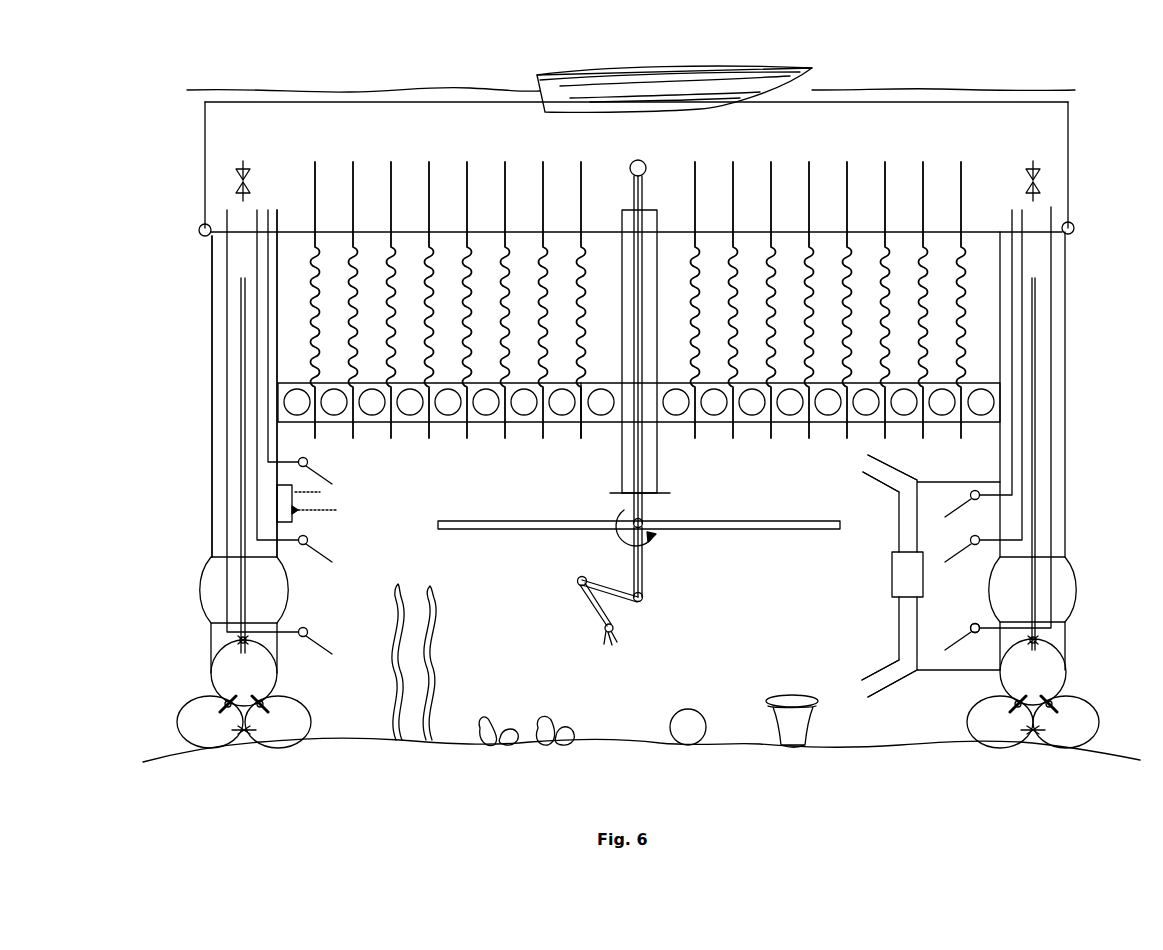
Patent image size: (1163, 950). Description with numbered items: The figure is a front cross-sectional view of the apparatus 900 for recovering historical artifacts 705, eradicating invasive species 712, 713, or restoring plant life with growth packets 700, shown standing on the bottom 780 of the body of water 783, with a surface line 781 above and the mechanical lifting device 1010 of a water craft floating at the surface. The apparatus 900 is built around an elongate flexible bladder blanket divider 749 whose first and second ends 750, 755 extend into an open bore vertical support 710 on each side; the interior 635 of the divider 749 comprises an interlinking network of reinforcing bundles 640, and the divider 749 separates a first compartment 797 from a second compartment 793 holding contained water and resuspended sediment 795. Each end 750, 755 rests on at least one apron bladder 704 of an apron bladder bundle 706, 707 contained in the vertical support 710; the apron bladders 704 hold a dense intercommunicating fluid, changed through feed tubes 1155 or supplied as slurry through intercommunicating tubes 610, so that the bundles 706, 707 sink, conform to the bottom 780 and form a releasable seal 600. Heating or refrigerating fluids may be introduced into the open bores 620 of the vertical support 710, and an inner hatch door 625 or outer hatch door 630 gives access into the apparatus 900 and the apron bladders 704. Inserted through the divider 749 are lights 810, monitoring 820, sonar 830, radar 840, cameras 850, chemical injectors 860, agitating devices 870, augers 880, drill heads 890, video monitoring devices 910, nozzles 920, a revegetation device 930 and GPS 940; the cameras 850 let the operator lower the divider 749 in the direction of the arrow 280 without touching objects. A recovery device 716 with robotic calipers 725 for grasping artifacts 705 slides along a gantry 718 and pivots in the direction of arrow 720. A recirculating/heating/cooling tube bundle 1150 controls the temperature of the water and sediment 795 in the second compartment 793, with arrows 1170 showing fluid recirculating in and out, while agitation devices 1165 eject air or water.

The body of water 783 is at (297, 74).
The surface line 781 is at (375, 88).
The mechanical lifting device 1010 is at (569, 72).
The apparatus 900 is at (276, 150).
The lights 810 is at (315, 290).
The monitoring device 820 is at (353, 290).
The sonar 830 is at (391, 290).
The radar 840 is at (429, 290).
The cameras 850 is at (467, 290).
The chemical injectors 860 is at (505, 290).
The agitating devices 870 is at (543, 290).
The augers 880 is at (581, 290).
The drill heads 890 is at (695, 290).
The GPS 940 is at (732, 290).
The video monitoring devices 910 is at (771, 290).
The nozzles 920 is at (809, 290).
The revegetation device 930 is at (847, 290).
The elongate flexible bladder blanket divider 749 is at (639, 438).
The reinforcing bundles 640 is at (560, 440).
The interior of the elongate flexible bladder blanket divider 635 is at (593, 440).
The first compartment 797 is at (692, 290).
The arrow 720 is at (620, 548).
The gantry 718 is at (766, 531).
The recovery device 716 is at (680, 602).
The robotic calipers 725 is at (592, 606).
The second compartment 793 is at (510, 496).
The contained water and resuspended sediment 795 is at (825, 608).
The first end 750 is at (283, 245).
The second end 755 is at (999, 245).
The open bores 620 is at (210, 262).
The open bore vertical support 710 is at (211, 396).
The outer hatch door 630 is at (205, 575).
The inner hatch door 625 is at (290, 590).
The intercommunicating tubes 610 is at (272, 702).
The apron bladder bundle 707 is at (180, 622).
The apron bladder 704 is at (1060, 660).
The apron bladder bundle 706 is at (1088, 682).
The feed tubes 1155 is at (1050, 350).
The arrow 280 is at (1112, 518).
The recirculating/heating/cooling tube bundle 1150 is at (898, 538).
The arrows 1170 is at (866, 460).
The agitation devices 1165 is at (945, 640).
The releasable seal 600 is at (966, 741).
The bottom of the body of water 780 is at (1118, 759).
The growth packets 700 is at (699, 712).
The historical artifacts 705 is at (788, 727).
The invasive species 712 is at (394, 678).
The invasive species 713 is at (546, 746).